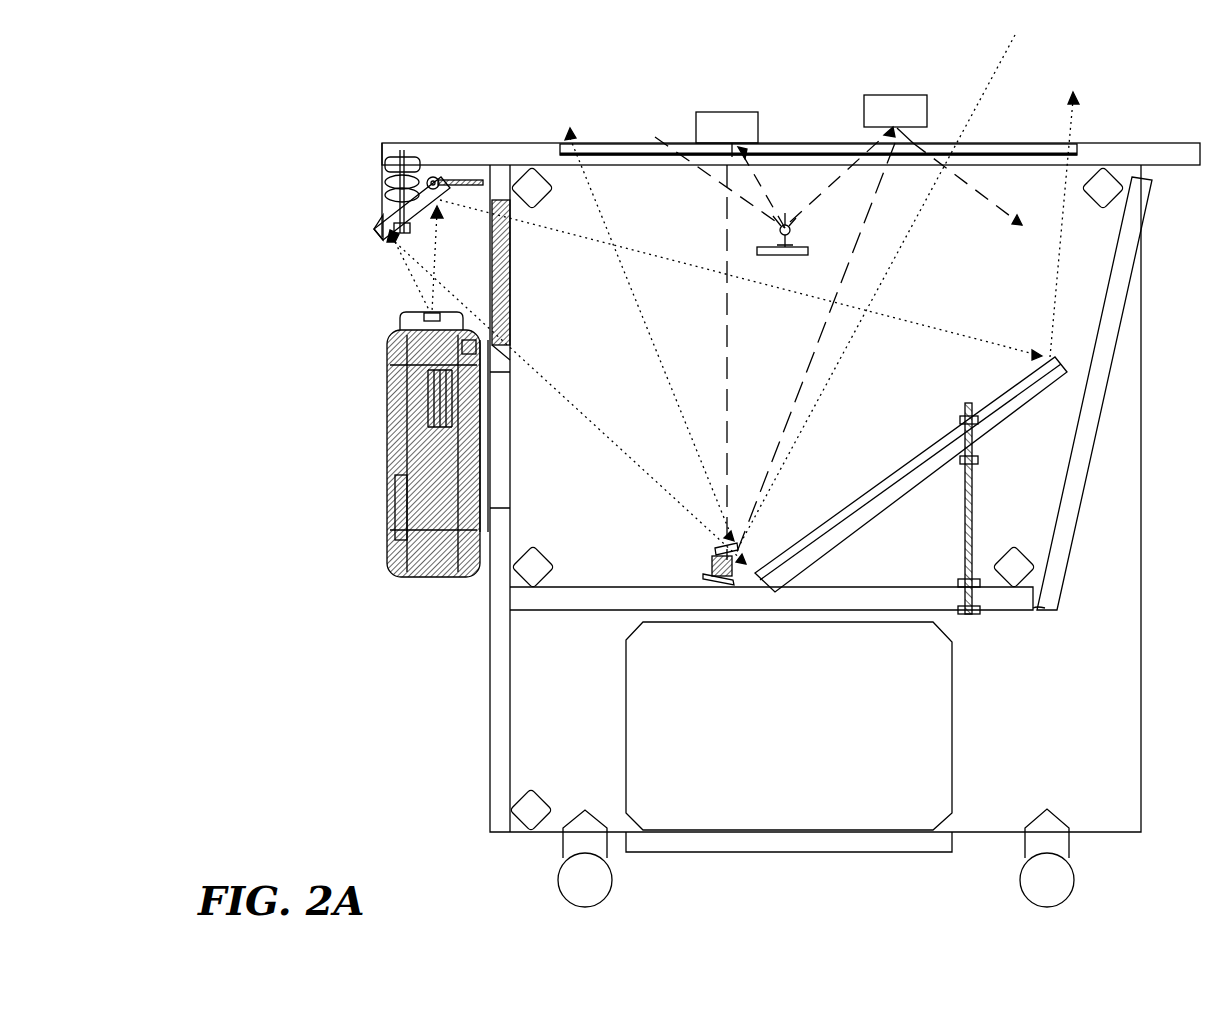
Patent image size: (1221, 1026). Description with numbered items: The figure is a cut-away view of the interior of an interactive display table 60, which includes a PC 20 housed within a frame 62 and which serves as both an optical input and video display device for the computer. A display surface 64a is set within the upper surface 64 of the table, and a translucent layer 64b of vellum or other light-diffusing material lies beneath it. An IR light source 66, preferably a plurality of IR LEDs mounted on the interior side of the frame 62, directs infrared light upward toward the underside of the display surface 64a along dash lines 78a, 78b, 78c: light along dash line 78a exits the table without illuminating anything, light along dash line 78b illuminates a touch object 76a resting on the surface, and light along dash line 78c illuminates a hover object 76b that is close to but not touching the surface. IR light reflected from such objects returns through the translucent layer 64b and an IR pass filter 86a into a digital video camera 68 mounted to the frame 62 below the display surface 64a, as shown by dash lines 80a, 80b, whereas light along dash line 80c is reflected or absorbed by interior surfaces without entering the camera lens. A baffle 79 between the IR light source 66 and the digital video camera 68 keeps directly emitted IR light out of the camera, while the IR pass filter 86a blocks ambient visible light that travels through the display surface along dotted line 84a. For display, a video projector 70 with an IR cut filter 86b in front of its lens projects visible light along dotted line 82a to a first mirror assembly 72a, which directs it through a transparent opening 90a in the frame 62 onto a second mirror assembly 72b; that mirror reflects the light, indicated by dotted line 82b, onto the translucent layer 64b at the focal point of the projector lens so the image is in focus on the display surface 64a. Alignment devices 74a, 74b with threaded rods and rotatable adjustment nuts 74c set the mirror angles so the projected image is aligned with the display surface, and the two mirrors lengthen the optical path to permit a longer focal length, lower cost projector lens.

The PC 20 is at (952, 725).
The interactive display table 60 is at (372, 652).
The frame 62 is at (490, 722).
The upper surface 64 is at (524, 152).
The display surface 64a is at (643, 118).
The translucent layer 64b is at (994, 147).
The IR light source 66 is at (758, 230).
The digital video camera 68 is at (714, 558).
The video projector 70 is at (380, 412).
The first mirror assembly 72a is at (388, 242).
The second mirror assembly 72b is at (876, 484).
The alignment device 74a is at (444, 183).
The alignment device 74b is at (972, 488).
The rotatable adjustment nut 74c is at (388, 234).
The touch object 76a is at (712, 112).
The hover object 76b is at (888, 94).
The dash line 78a is at (686, 168).
The dash line 78b is at (770, 192).
The dash line 78c is at (846, 169).
The baffle 79 is at (788, 255).
The dash line 80a is at (720, 312).
The dash line 80b is at (792, 350).
The dash line 80c is at (974, 200).
The dotted line 82a is at (434, 262).
The dotted line 82b is at (638, 279).
The dotted line 84a is at (1000, 48).
The IR pass filter 86a is at (724, 546).
The IR cut filter 86b is at (400, 316).
The transparent opening 90a is at (510, 323).